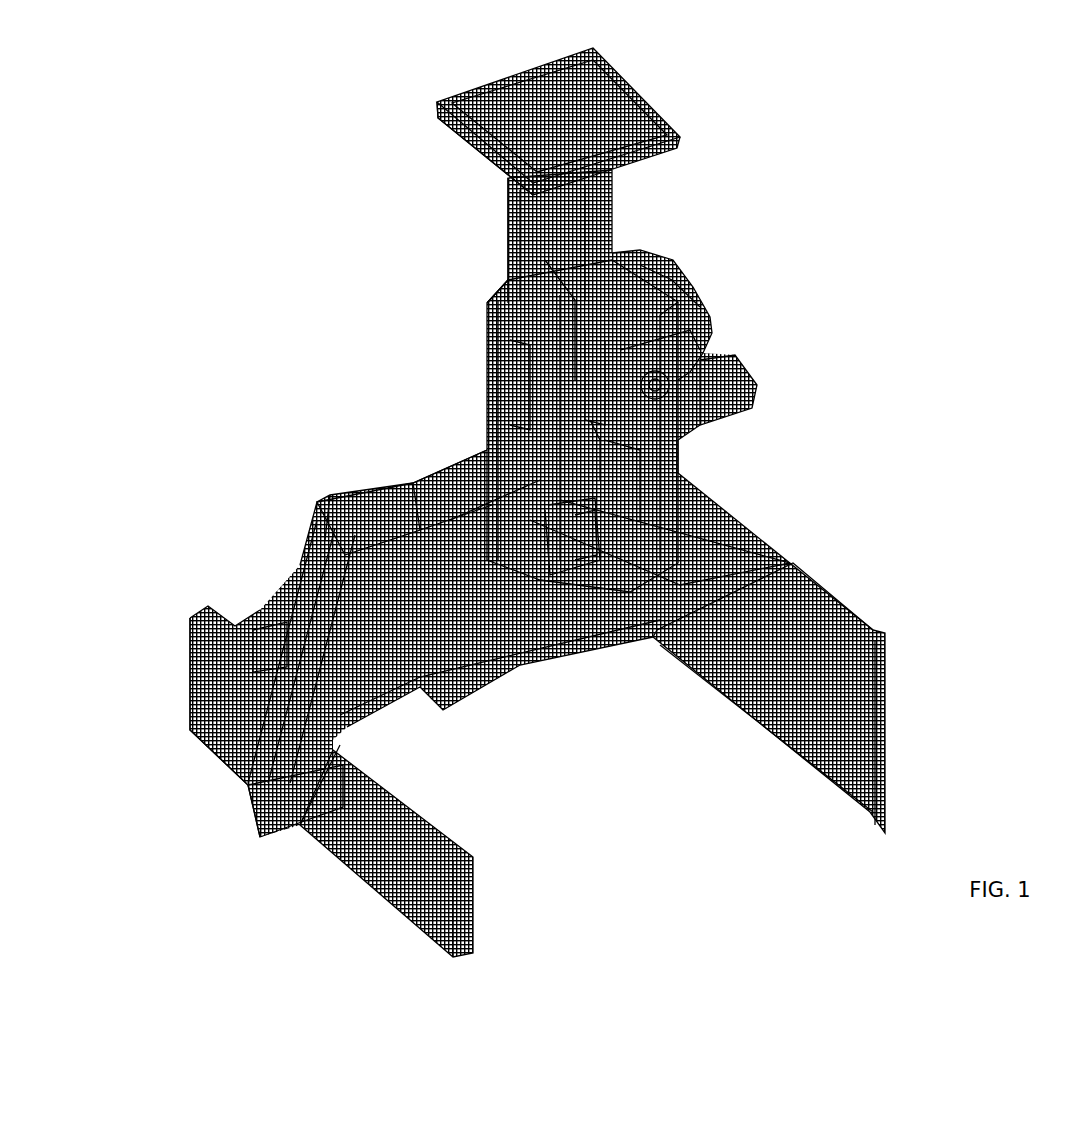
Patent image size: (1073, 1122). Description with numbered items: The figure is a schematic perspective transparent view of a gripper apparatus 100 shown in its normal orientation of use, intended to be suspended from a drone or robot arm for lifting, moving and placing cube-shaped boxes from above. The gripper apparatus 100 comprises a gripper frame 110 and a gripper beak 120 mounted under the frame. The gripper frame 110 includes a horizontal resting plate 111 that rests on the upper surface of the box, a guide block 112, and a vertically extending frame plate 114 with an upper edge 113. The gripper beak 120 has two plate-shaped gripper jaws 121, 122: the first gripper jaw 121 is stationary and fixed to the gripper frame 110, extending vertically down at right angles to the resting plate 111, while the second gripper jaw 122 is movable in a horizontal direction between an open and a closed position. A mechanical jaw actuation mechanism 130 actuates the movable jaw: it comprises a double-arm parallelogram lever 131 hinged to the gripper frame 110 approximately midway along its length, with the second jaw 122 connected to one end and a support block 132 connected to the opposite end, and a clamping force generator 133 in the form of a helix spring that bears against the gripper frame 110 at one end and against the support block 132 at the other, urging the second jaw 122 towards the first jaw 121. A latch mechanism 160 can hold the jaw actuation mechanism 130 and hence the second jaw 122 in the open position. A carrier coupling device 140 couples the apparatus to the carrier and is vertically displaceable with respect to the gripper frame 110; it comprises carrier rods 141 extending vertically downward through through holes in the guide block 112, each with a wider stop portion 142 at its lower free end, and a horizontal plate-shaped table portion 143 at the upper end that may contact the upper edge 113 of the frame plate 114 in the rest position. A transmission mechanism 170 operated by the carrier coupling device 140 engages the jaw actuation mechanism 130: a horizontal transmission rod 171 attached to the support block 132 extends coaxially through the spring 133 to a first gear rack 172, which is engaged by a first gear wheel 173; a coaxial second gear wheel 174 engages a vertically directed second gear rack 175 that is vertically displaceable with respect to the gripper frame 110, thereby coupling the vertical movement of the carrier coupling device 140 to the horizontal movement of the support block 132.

The gripper apparatus 100 is at (915, 100).
The gripper frame 110 is at (680, 515).
The resting plate 111 is at (562, 650).
The guide block 112 is at (603, 373).
The upper edge 113 is at (573, 290).
The frame plate 114 is at (487, 303).
The gripper beak 120 is at (630, 832).
The first gripper jaw 121 is at (827, 777).
The second gripper jaw 122 is at (478, 878).
The jaw actuation mechanism 130 is at (340, 386).
The lever 131 is at (243, 763).
The support block 132 is at (367, 497).
The clamping force generator 133 is at (452, 463).
The carrier coupling device 140 is at (612, 117).
The carrier rod 141 is at (610, 212).
The stop portion 142 is at (592, 427).
The table portion 143 is at (455, 128).
The latch mechanism 160 is at (604, 542).
The transmission mechanism 170 is at (775, 355).
The transmission rod 171 is at (610, 442).
The first gear rack 172 is at (745, 400).
The first gear wheel 173 is at (703, 357).
The second gear wheel 174 is at (700, 302).
The second gear rack 175 is at (520, 344).